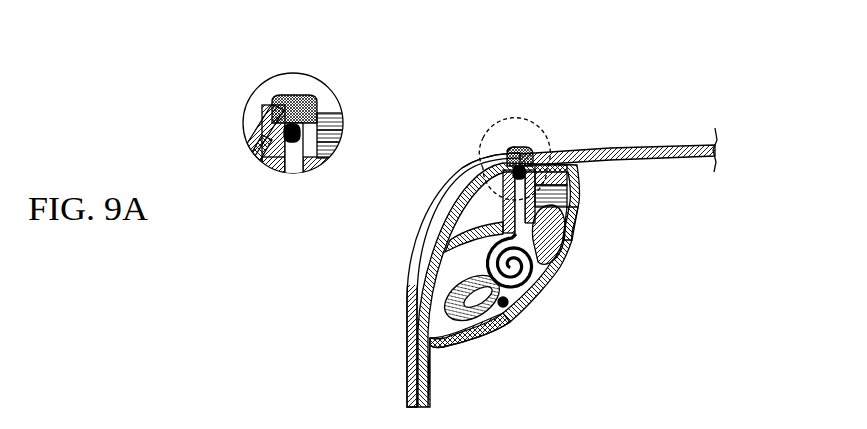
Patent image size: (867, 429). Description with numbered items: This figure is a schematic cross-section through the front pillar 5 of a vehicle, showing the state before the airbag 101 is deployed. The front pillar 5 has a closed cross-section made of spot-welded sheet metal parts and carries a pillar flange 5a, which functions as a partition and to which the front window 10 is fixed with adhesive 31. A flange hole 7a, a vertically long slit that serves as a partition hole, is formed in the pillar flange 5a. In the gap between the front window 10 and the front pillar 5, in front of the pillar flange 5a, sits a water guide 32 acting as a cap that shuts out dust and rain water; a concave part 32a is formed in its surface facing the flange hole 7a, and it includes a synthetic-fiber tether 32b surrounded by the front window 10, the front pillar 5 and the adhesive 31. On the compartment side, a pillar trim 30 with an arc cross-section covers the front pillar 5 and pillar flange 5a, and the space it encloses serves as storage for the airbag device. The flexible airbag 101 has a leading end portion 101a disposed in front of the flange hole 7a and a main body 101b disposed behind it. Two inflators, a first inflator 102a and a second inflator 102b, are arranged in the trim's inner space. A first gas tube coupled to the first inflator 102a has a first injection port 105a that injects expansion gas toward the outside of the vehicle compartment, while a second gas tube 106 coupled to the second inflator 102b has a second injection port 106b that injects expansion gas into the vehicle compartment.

The front pillar 5 is at (408, 397).
The pillar flange 5a is at (570, 210).
The flange hole 7a is at (480, 164).
The front window 10 is at (690, 160).
The pillar trim 30 is at (458, 345).
The adhesive 31 is at (555, 176).
The water guide 32 is at (517, 140).
The concave part 32a is at (508, 148).
The tether 32b is at (560, 190).
The airbag 101 is at (364, 204).
The leading end portion 101a is at (510, 208).
The main body 101b is at (500, 235).
The first inflator 102a is at (560, 214).
The second inflator 102b is at (497, 330).
The first injection port 105a is at (533, 167).
The second gas tube 106 is at (515, 310).
The second injection port 106b is at (509, 301).